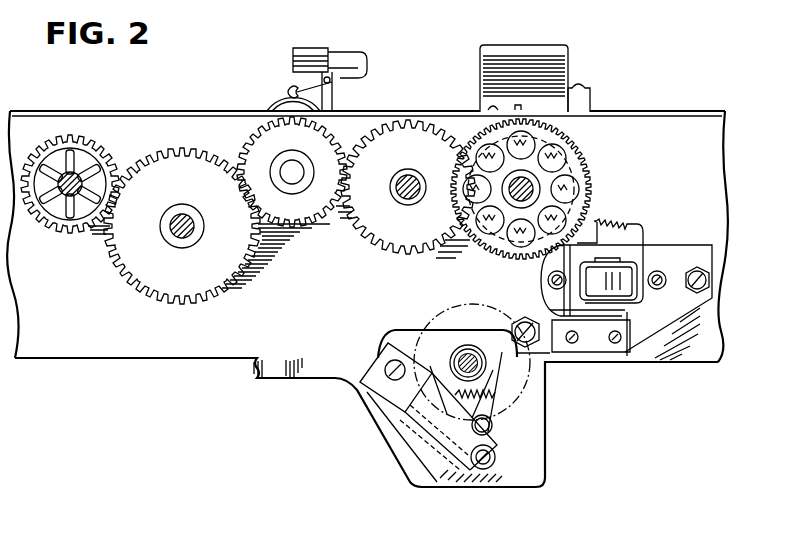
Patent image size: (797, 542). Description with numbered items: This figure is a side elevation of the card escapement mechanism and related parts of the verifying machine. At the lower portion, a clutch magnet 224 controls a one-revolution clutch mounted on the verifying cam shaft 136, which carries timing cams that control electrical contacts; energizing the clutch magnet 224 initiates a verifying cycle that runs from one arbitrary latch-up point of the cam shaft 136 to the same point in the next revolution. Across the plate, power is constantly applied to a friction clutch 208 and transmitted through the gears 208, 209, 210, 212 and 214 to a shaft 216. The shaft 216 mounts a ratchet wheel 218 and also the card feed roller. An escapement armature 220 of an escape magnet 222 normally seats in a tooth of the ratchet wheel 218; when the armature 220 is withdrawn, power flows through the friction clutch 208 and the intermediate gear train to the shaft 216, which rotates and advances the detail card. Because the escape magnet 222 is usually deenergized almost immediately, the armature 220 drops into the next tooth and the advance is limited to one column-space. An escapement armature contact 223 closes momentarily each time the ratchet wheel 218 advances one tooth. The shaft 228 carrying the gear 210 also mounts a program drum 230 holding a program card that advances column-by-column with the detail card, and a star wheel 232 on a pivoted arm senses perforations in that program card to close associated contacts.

The verifying cam shaft 136 is at (452, 355).
The friction clutch 208 is at (40, 238).
The gear 209 is at (130, 283).
The gear 210 is at (296, 230).
The gear 212 is at (388, 253).
The gear 214 is at (558, 158).
The shaft 216 is at (535, 186).
The ratchet wheel 218 is at (568, 148).
The escapement armature 220 is at (600, 245).
The escape magnet 222 is at (628, 292).
The escapement armature contact 223 is at (562, 257).
The clutch magnet 224 is at (420, 412).
The shaft 228 is at (290, 172).
The program drum 230 is at (263, 108).
The star wheel 232 is at (287, 84).